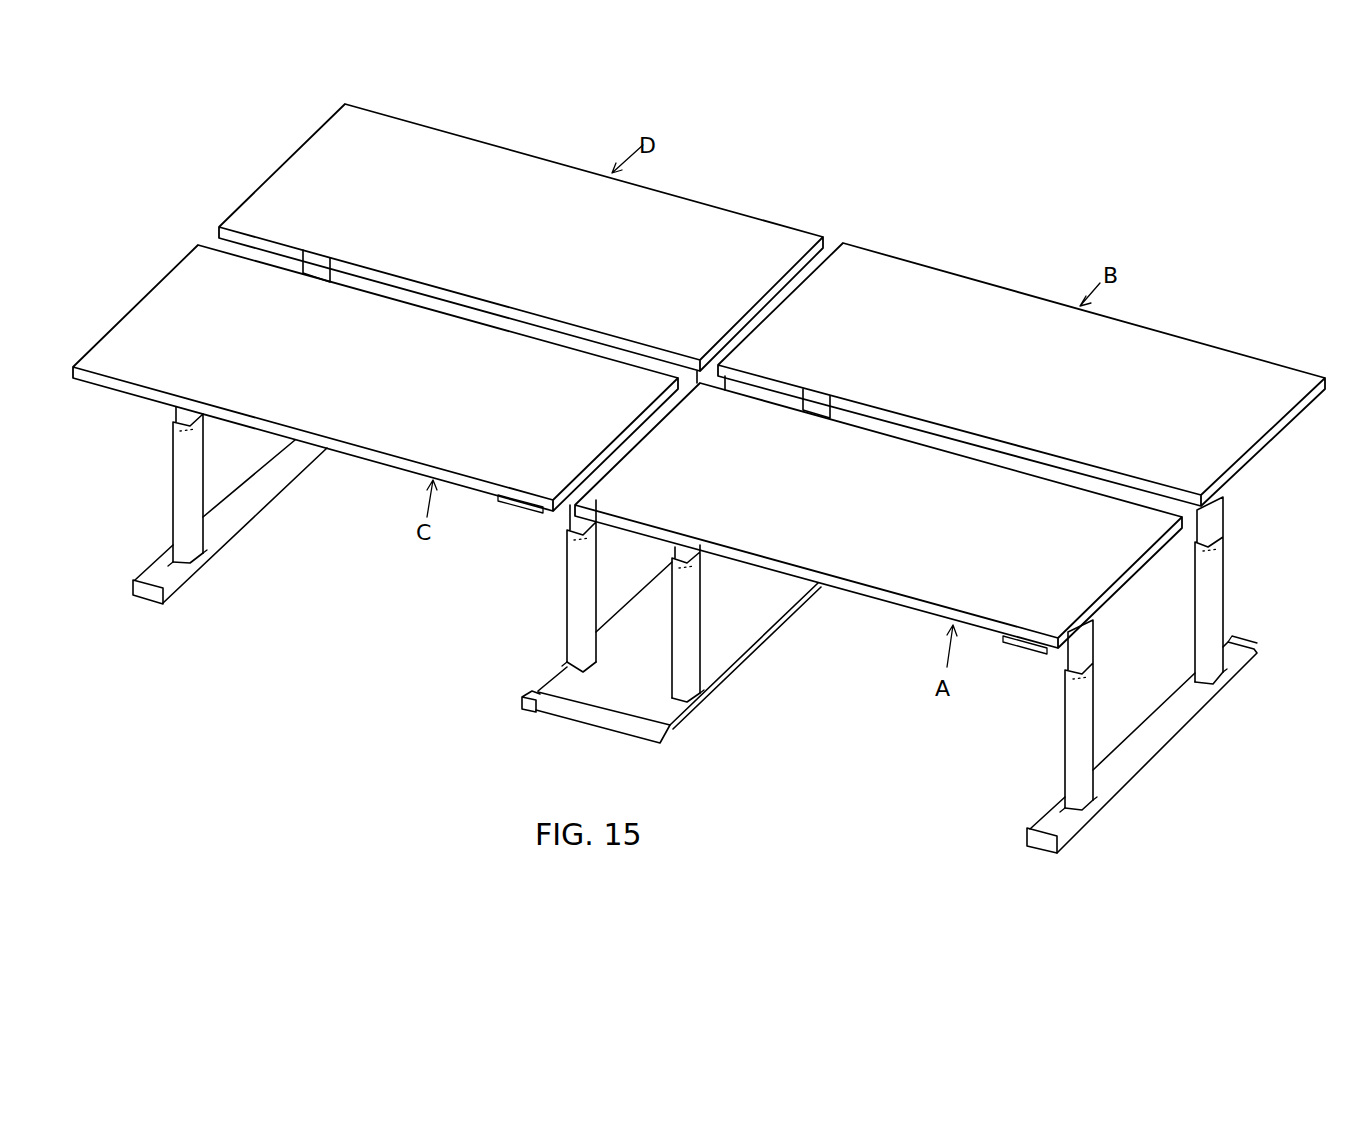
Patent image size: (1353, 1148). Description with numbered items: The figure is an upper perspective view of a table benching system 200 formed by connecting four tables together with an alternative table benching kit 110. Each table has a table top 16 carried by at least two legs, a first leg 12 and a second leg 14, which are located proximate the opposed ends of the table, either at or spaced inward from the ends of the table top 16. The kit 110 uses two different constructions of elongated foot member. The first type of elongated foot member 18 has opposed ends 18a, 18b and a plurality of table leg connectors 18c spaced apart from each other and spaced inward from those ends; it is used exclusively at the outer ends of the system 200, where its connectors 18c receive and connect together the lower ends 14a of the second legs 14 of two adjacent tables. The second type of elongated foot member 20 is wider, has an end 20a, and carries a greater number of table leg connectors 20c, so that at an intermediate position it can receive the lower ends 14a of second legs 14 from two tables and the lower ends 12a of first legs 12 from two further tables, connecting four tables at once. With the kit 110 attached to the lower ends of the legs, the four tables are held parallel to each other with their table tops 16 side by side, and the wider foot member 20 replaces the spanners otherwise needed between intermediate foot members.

The first leg 12 is at (700, 365).
The lower end of first leg 12a is at (577, 657).
The second leg 14 is at (314, 258).
The lower end of second leg 14a is at (183, 552).
The table top 16 is at (530, 168).
The elongated foot member 18 is at (282, 500).
The end of elongated foot member 18a is at (125, 599).
The end of elongated foot member 18b is at (1266, 656).
The table leg connector 18c is at (199, 573).
The elongated foot member 20 is at (808, 617).
The end of elongated foot member 20a is at (511, 707).
The table leg connector 20c is at (547, 672).
The table benching kit 110 is at (1184, 863).
The table benching system 200 is at (975, 134).